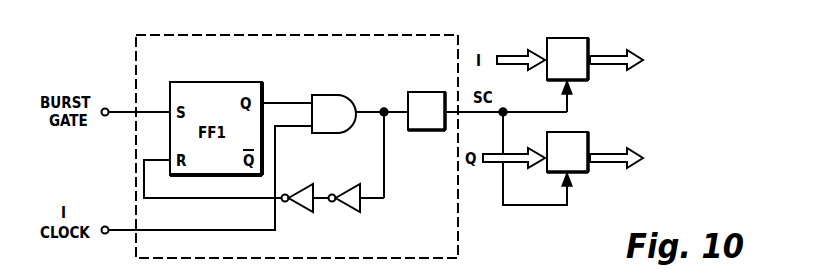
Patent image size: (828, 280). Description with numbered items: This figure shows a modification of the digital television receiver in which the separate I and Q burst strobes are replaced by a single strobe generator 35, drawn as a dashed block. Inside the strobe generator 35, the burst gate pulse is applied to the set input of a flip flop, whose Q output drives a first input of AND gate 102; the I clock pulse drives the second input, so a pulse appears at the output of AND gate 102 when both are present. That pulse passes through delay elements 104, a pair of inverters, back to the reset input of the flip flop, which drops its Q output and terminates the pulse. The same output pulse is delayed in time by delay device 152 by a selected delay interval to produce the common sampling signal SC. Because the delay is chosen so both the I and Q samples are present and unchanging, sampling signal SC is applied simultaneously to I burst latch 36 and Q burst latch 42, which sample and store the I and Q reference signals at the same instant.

The strobe generator 35 is at (431, 35).
The AND gate 102 is at (332, 94).
The delay elements 104 is at (370, 180).
The delay device 152 is at (438, 131).
The I burst latch 36 is at (578, 70).
The Q burst latch 42 is at (578, 164).